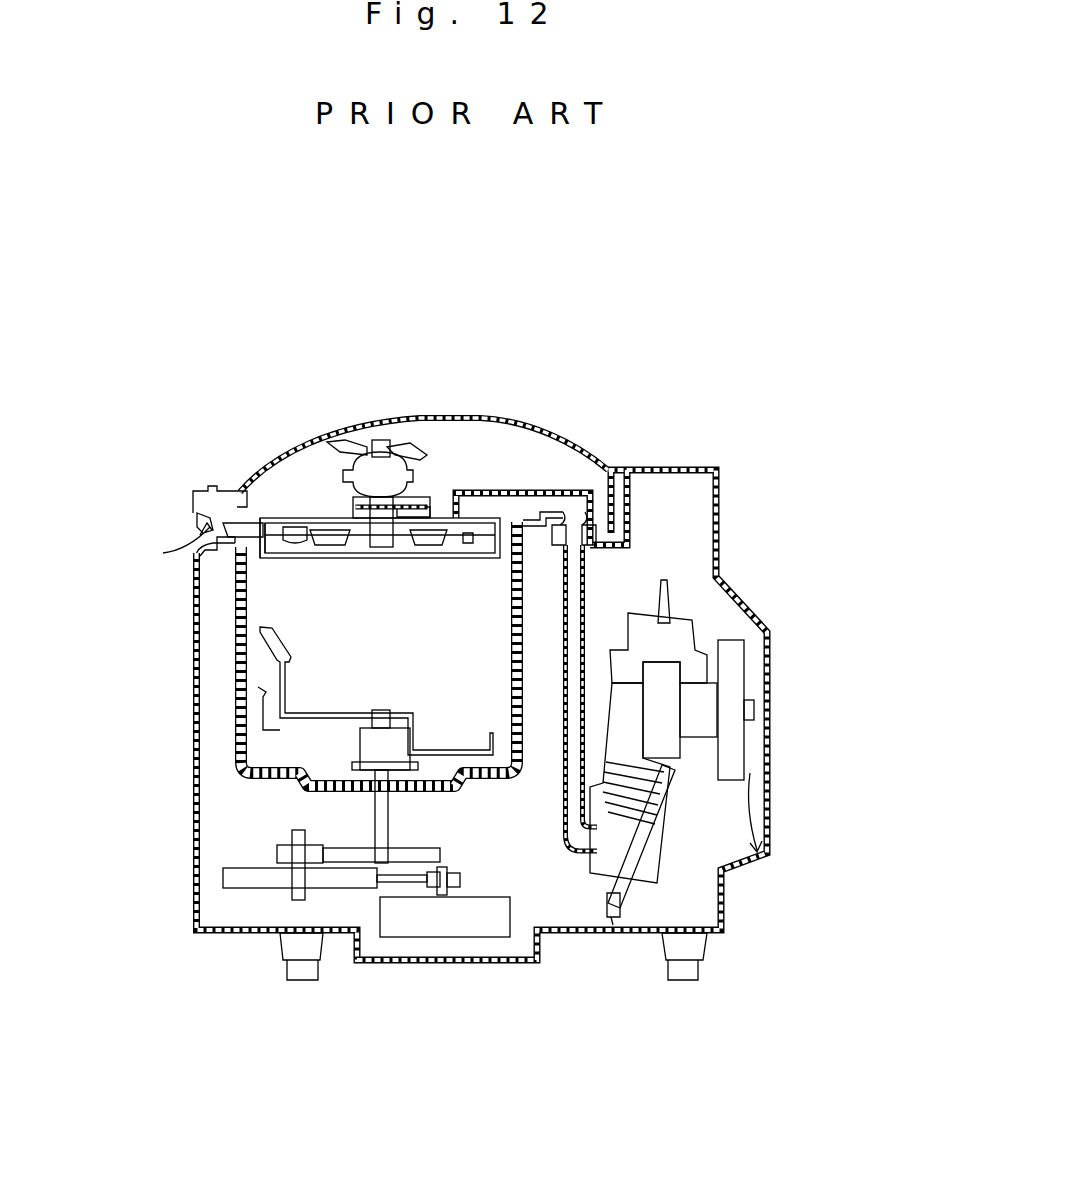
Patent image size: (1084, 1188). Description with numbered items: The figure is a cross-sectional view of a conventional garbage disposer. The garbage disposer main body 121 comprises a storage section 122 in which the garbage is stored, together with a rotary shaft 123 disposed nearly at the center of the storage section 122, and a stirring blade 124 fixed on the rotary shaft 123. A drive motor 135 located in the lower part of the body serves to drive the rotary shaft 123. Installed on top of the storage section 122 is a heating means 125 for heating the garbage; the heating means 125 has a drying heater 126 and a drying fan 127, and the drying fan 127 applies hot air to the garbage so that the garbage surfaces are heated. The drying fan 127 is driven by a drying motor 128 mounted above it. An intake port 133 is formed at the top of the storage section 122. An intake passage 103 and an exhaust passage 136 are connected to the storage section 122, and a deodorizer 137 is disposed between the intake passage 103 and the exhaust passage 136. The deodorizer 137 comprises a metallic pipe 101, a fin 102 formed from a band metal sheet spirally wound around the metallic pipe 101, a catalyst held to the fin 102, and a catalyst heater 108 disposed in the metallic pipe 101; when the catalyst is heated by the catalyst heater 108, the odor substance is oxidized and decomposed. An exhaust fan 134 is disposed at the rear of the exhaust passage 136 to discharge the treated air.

The garbage disposer main body 121 is at (480, 382).
The storage section 122 is at (240, 617).
The rotary shaft 123 is at (383, 808).
The stirring blade 124 is at (277, 650).
The heating means 125 is at (293, 520).
The drying heater 126 is at (267, 518).
The drying fan 127 is at (477, 490).
The drying motor 128 is at (367, 447).
The intake port 133 is at (198, 520).
The exhaust fan 134 is at (743, 738).
The drive motor 135 is at (433, 927).
The exhaust passage 136 is at (700, 633).
The deodorizer 137 is at (652, 862).
The metallic pipe 101 is at (744, 774).
The fin 102 is at (660, 802).
The intake passage 103 is at (583, 590).
The catalyst heater 108 is at (620, 888).